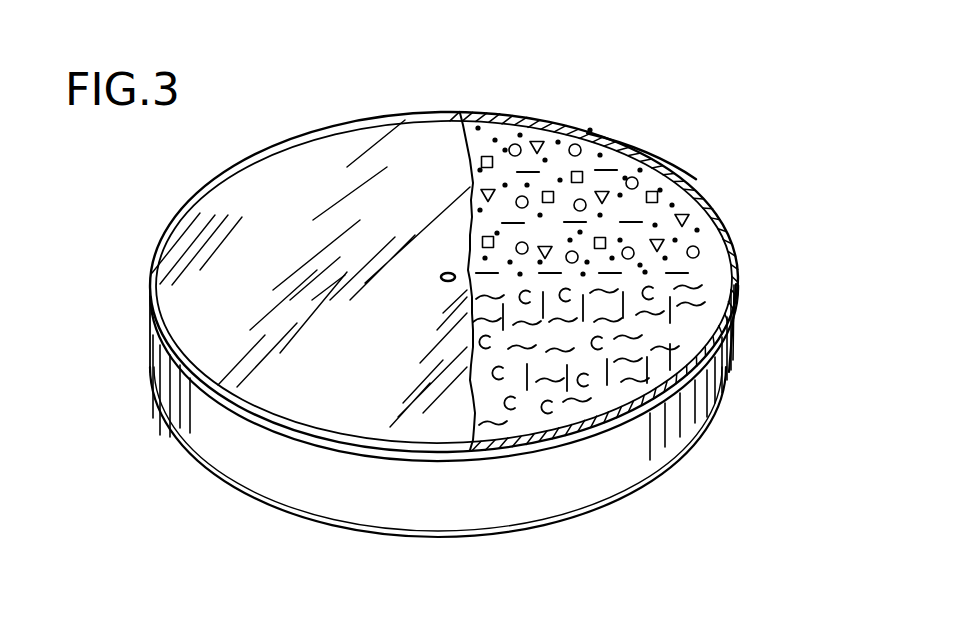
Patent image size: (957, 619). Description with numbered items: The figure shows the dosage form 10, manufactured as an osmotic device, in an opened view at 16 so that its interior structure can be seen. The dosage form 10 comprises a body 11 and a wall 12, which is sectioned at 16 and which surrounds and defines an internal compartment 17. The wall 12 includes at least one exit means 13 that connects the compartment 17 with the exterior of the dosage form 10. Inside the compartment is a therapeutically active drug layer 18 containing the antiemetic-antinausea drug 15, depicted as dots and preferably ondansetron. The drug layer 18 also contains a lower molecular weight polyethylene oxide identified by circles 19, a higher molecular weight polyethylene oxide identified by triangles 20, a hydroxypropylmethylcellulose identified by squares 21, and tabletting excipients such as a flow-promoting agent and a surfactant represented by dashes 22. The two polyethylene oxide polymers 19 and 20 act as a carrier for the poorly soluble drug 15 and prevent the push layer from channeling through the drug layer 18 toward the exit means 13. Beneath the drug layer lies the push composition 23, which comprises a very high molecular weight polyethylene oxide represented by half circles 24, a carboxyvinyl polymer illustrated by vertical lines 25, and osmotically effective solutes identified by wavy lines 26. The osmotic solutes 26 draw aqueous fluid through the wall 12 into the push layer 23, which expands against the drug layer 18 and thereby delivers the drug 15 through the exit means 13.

The dosage form 10 is at (694, 86).
The body 11 is at (712, 207).
The wall 12 is at (722, 244).
The exit means 13 is at (448, 270).
The antiemetic-antinausea drug 15 is at (622, 140).
The opened view 16 is at (475, 407).
The internal compartment 17 is at (690, 268).
The drug layer 18 is at (690, 192).
The polyethylene oxide of 200,000 molecular weight 19 is at (511, 143).
The polyethylene oxide of 300,000 molecular weight 20 is at (705, 212).
The hydroxypropylmethylcellulose 21 is at (680, 182).
The tabletting excipients 22 is at (588, 142).
The push composition 23 is at (732, 338).
The polyethylene oxide of 5,000,000 to 7,500,000 molecular weight 24 is at (560, 405).
The carboxyvinyl polymer 25 is at (609, 372).
The osmotically effective compound 26 is at (733, 400).